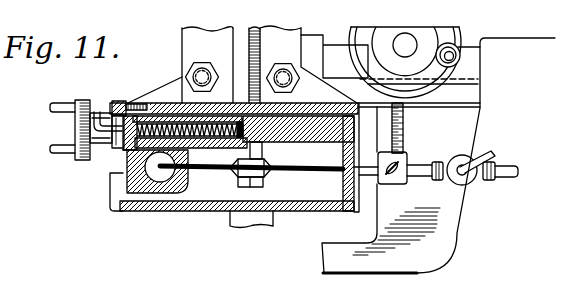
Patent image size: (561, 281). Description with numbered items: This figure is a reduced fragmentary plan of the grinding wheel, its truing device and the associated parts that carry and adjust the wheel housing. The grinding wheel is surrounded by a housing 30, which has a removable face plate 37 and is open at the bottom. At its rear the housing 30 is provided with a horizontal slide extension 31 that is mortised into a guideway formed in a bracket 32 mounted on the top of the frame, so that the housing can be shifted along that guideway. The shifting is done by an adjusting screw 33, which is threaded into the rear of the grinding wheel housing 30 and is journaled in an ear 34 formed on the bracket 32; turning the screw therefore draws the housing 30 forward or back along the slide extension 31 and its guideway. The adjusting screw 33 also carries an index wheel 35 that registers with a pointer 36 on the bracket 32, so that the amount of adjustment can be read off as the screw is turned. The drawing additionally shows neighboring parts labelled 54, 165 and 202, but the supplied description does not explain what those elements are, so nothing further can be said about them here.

The housing 30 is at (356, 143).
The horizontal slide extension 31 is at (348, 130).
The bracket 32 is at (168, 89).
The adjusting screw 33 is at (126, 157).
The ear 34 is at (110, 153).
The index wheel 35 is at (78, 129).
The pointer 36 is at (100, 110).
The removable face plate 37 is at (170, 207).
The float bowl 54 is at (478, 85).
The bracket 165 is at (228, 270).
The tank 202 is at (447, 212).